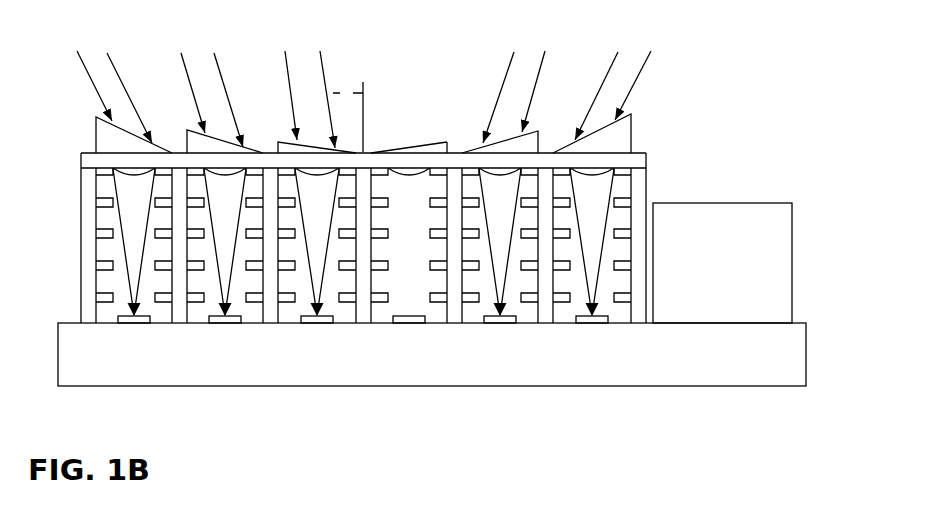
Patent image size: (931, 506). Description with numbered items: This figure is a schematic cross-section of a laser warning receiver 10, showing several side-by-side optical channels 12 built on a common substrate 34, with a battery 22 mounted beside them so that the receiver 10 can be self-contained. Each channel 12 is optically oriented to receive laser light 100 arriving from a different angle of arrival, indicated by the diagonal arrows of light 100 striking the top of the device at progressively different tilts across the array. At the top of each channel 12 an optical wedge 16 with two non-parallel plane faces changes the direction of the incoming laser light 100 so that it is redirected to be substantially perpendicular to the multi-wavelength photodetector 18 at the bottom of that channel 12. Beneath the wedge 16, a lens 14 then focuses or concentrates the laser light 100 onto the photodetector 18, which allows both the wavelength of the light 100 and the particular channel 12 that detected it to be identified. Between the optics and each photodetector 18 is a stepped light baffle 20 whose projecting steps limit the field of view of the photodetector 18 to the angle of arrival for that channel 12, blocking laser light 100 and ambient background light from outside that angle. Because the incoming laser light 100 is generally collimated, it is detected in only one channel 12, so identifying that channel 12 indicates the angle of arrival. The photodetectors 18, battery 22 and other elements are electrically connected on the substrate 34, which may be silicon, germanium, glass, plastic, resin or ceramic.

The laser warning receiver 10 is at (432, 247).
The optical channel 12 is at (372, 139).
The lens 14 is at (415, 176).
The optical wedge 16 is at (440, 142).
The multi-wavelength photodetector 18 is at (407, 324).
The light baffle 20 is at (421, 293).
The battery 22 is at (745, 304).
The substrate 34 is at (73, 372).
The laser light 100 is at (79, 55).